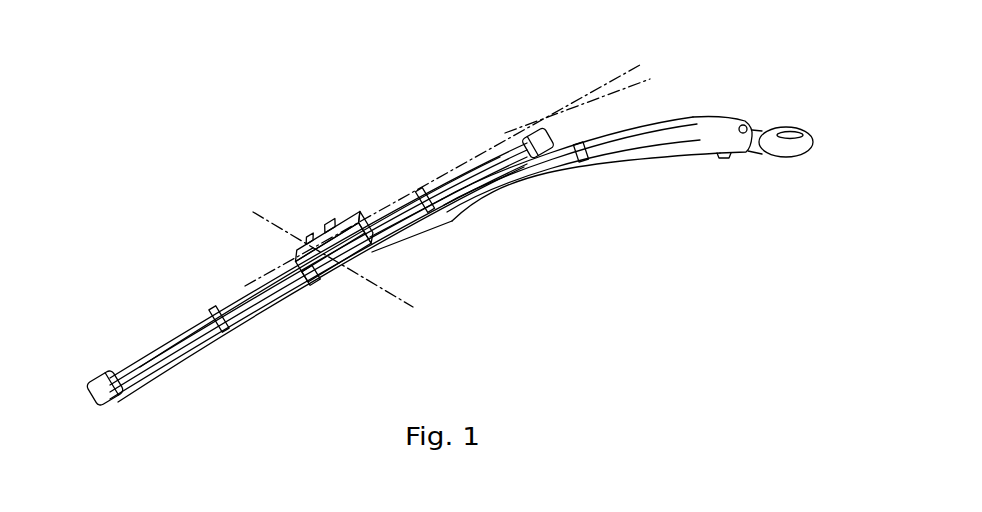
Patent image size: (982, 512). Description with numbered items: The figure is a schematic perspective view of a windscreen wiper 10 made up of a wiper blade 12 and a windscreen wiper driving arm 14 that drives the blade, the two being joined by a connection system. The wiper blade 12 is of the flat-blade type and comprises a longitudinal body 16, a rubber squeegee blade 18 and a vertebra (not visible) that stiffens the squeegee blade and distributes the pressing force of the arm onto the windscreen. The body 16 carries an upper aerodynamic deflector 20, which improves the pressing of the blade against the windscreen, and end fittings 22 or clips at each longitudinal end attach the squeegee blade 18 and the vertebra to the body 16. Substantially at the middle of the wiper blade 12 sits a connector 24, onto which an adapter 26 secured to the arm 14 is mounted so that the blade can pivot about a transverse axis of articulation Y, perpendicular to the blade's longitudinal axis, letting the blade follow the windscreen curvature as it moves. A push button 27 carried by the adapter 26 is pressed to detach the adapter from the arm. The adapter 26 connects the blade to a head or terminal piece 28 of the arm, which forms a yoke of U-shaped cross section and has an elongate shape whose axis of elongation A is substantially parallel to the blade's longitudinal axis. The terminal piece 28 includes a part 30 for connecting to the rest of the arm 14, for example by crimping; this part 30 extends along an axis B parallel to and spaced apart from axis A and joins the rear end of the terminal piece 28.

The windscreen wiper 10 is at (374, 122).
The wiper blade 12 is at (145, 346).
The windscreen wiper driving arm 14 is at (564, 186).
The longitudinal body 16 is at (190, 338).
The squeegee blade 18 is at (197, 352).
The upper aerodynamic deflector 20 is at (258, 298).
The end fittings 22 is at (103, 377).
The connector 24 is at (336, 272).
The adapter 26 is at (305, 272).
The push button 27 is at (338, 230).
The terminal piece 28 is at (315, 236).
The connecting part 30 is at (415, 232).
The axis of elongation A is at (625, 72).
The axis B is at (640, 88).
The axis of articulation Y is at (401, 304).